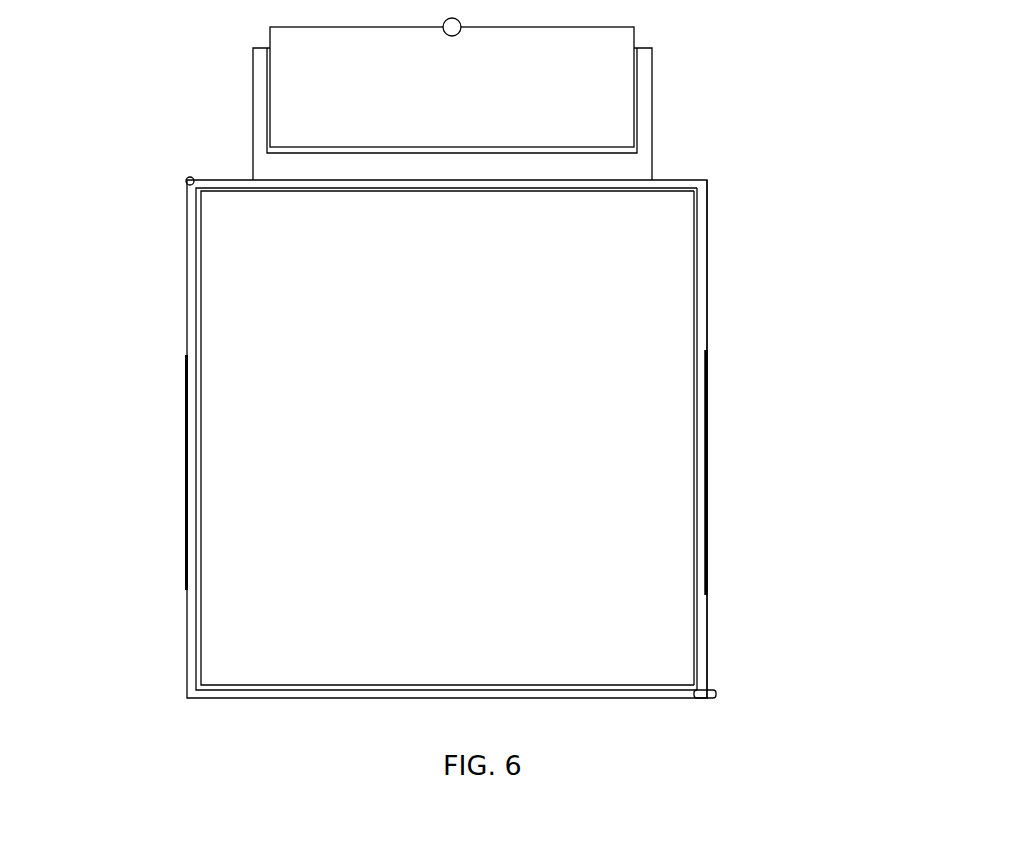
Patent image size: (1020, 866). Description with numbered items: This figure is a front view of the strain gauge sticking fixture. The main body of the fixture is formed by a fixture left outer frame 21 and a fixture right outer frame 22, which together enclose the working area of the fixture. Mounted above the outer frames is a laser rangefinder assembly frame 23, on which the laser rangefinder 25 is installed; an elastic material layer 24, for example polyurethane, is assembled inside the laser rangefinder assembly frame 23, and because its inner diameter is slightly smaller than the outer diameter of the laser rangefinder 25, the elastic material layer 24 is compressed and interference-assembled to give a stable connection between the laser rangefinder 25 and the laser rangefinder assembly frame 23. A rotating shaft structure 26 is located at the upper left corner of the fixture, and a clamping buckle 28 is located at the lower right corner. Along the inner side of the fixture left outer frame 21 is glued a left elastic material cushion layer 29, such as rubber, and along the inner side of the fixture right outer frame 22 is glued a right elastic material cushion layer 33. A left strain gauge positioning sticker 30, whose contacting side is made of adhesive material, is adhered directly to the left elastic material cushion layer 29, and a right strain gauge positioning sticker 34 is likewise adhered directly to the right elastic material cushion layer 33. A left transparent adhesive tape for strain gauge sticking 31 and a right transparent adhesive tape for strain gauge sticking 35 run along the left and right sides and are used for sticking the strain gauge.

The fixture left outer frame 21 is at (188, 258).
The fixture right outer frame 22 is at (707, 232).
The laser rangefinder assembly frame 23 is at (652, 162).
The elastic material layer 24 is at (637, 114).
The laser rangefinder 25 is at (613, 68).
The rotating shaft structure 26 is at (186, 183).
The clamping buckle 28 is at (716, 692).
The left elastic material cushion layer 29 is at (197, 295).
The left strain gauge positioning sticker 30 is at (202, 335).
The left transparent adhesive tape for strain gauge sticking 31 is at (188, 443).
The right elastic material cushion layer 33 is at (697, 272).
The right strain gauge positioning sticker 34 is at (694, 312).
The right transparent adhesive tape for strain gauge sticking 35 is at (707, 443).